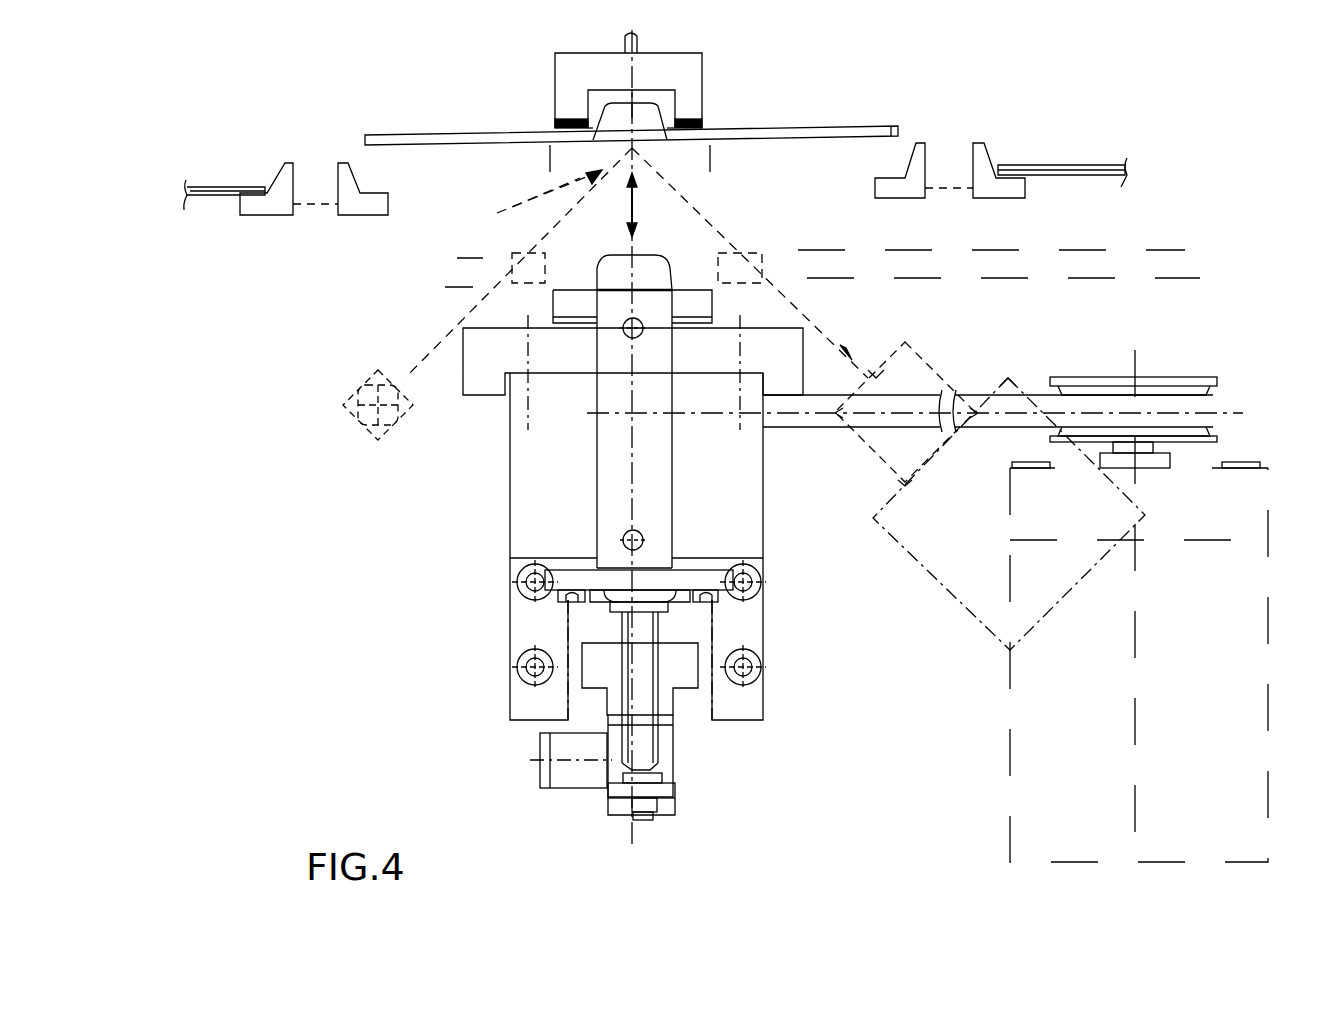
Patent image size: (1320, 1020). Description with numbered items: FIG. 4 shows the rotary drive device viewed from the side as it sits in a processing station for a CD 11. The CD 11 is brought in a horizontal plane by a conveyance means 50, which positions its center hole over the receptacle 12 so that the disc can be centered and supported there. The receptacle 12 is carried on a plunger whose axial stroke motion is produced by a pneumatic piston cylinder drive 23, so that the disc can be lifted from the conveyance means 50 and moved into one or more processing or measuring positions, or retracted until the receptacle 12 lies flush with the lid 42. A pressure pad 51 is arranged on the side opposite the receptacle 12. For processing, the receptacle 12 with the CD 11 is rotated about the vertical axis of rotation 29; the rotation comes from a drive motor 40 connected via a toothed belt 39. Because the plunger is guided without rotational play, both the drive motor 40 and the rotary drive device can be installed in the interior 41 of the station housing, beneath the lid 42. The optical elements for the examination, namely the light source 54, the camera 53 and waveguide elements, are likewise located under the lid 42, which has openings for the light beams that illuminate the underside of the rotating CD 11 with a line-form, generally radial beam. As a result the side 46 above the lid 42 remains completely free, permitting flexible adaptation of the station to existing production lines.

The CD 11 is at (213, 195).
The receptacle 12 is at (590, 268).
The pneumatic piston cylinder drive 23 is at (625, 517).
The axis of rotation 29 is at (627, 97).
The toothed belt 39 is at (882, 432).
The drive motor 40 is at (1112, 640).
The interior 41 is at (876, 583).
The lid 42 is at (1178, 275).
The side 46 is at (1040, 102).
The conveyance means 50 is at (362, 205).
The pressure pad 51 is at (693, 98).
The camera 53 is at (943, 578).
The light source 54 is at (355, 420).